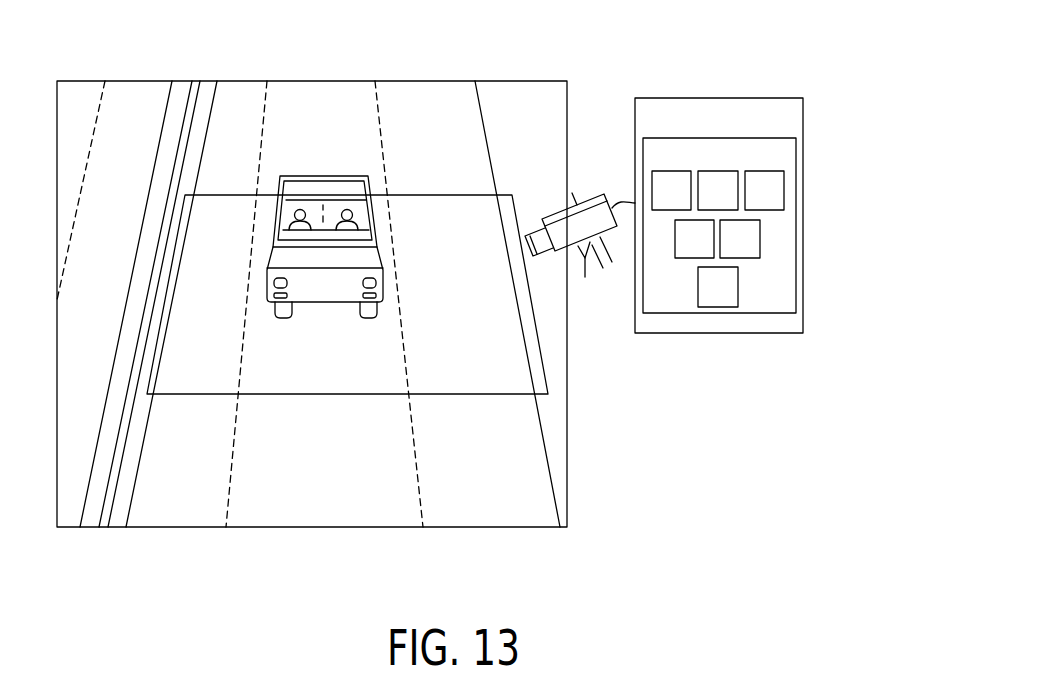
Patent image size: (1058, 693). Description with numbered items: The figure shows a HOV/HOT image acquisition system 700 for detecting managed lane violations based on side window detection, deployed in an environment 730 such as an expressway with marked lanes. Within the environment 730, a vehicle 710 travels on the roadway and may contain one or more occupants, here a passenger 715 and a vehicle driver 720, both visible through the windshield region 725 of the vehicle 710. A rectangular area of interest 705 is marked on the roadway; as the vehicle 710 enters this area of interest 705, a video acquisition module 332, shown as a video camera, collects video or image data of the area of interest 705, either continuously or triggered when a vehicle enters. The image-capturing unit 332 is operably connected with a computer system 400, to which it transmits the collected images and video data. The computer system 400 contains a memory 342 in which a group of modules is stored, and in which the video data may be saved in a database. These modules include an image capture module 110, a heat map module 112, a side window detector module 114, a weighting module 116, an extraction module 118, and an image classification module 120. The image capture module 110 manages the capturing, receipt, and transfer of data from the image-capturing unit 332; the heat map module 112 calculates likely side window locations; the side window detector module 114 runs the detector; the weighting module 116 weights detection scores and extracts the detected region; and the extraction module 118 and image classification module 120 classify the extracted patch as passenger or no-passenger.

The HOV/HOT image acquisition system 700 is at (613, 410).
The area of interest 705 is at (473, 232).
The vehicle 710 is at (315, 217).
The passenger 715 is at (288, 222).
The vehicle driver 720 is at (347, 228).
The windshield region 725 is at (370, 190).
The environment 730 is at (324, 528).
The video acquisition module 332 is at (580, 245).
The computer system 400 is at (697, 98).
The memory 342 is at (796, 148).
The image capture module 110 is at (685, 203).
The heat map module 112 is at (731, 203).
The side window detector module 114 is at (778, 203).
The weighting module 116 is at (708, 252).
The extraction module 118 is at (754, 252).
The image classification module 120 is at (731, 300).